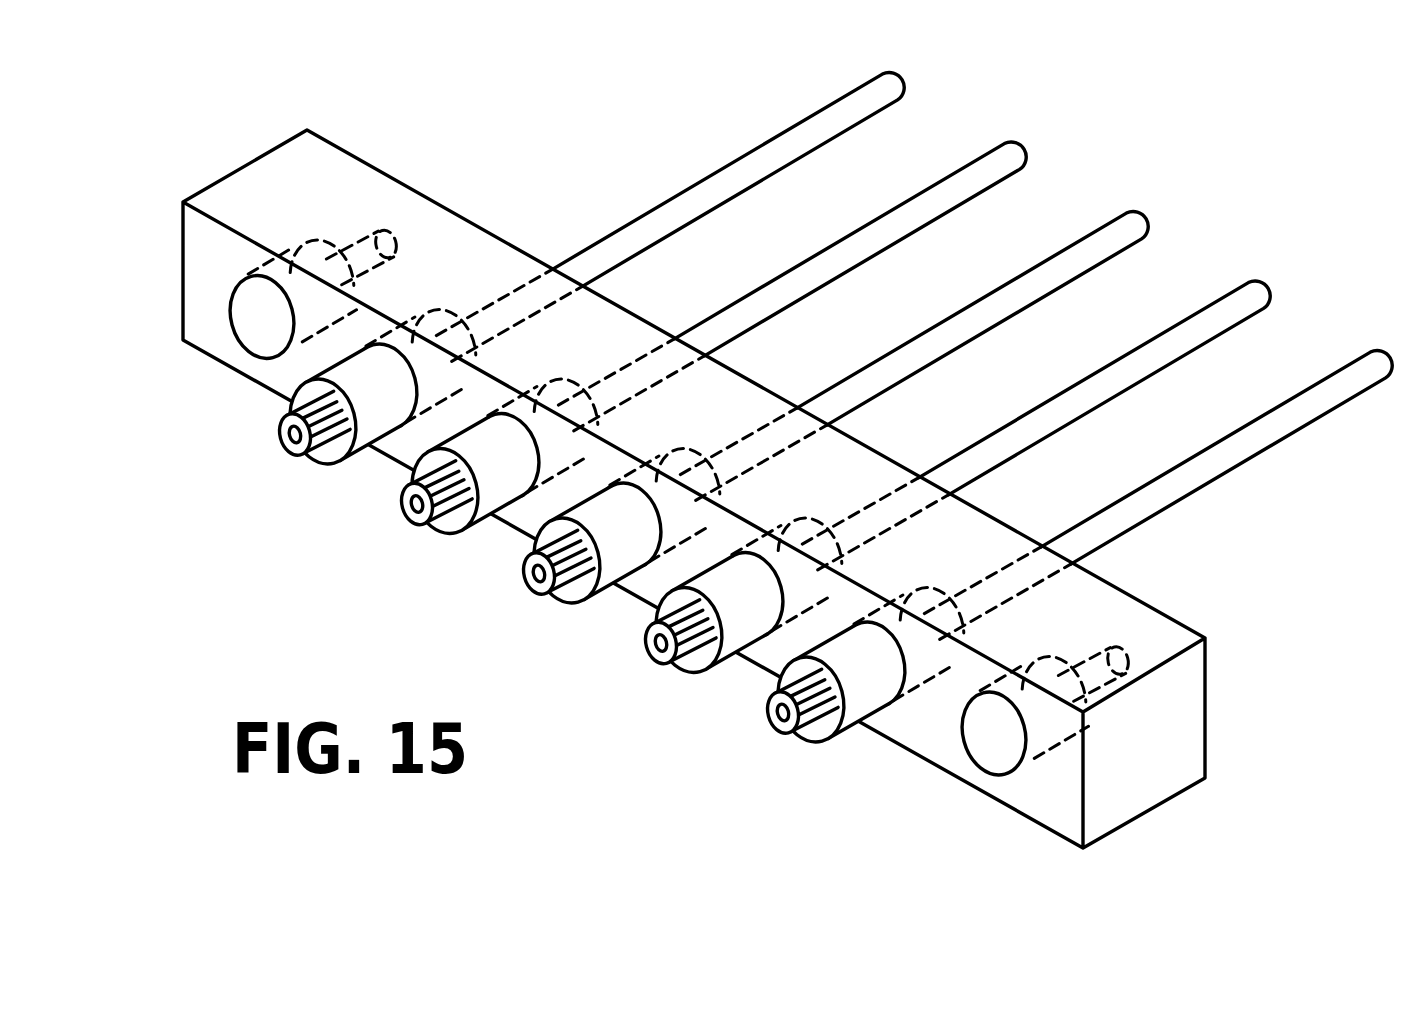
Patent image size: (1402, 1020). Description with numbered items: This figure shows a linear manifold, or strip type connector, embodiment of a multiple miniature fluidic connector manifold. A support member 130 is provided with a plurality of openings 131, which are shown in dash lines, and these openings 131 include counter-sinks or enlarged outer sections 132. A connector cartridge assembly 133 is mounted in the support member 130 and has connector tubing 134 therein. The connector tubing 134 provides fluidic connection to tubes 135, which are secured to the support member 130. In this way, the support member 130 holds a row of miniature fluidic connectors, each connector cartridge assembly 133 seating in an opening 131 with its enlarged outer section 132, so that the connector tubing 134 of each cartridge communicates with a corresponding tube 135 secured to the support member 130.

The support member 130 is at (1178, 741).
The openings 131 is at (512, 290).
The counter-sinks or enlarged outer sections 132 is at (262, 316).
The connector cartridge assembly 133 is at (370, 423).
The connector tubing 134 is at (278, 424).
The tubes 135 is at (760, 146).